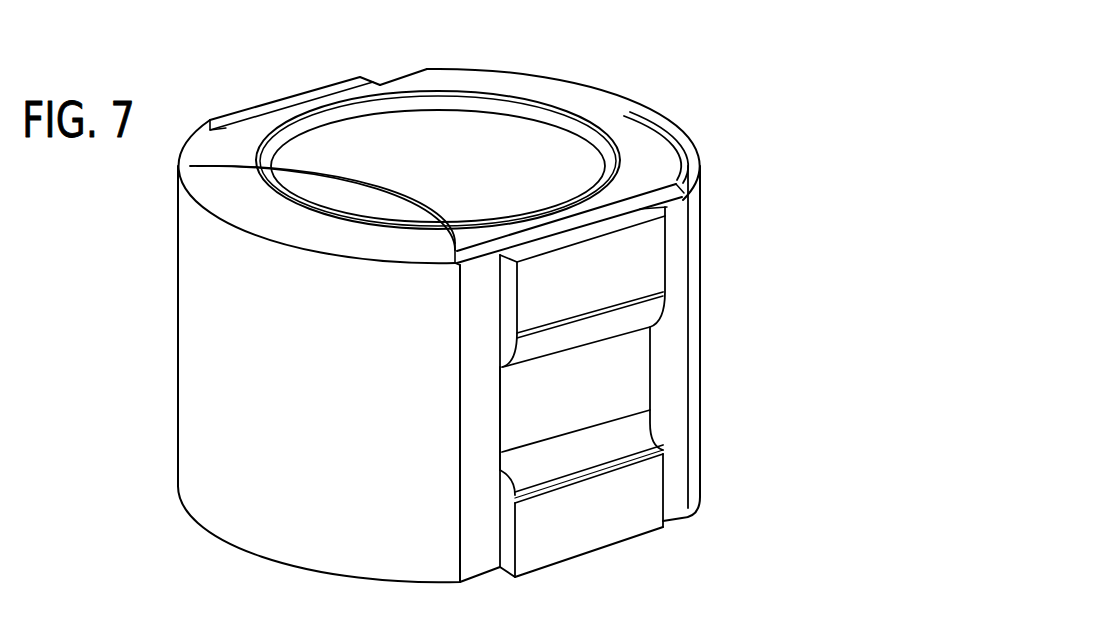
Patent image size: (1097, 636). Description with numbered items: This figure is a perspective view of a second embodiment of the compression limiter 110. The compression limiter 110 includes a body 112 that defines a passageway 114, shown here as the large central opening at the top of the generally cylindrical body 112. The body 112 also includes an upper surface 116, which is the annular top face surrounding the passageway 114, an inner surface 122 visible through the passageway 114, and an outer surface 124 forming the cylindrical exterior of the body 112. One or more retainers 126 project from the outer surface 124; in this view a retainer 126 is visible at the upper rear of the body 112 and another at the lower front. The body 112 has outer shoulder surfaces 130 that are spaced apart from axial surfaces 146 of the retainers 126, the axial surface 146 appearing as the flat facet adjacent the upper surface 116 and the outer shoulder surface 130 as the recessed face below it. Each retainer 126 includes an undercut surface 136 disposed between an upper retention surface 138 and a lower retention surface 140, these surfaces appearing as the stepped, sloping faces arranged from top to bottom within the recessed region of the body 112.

The compression limiter 110 is at (700, 78).
The body 112 is at (706, 345).
The passageway 114 is at (486, 138).
The upper surface 116 is at (625, 125).
The inner surface 122 is at (417, 170).
The outer surface 124 is at (210, 357).
The retainer 126 is at (284, 91).
The outer shoulder surface 130 is at (608, 212).
The undercut surface 136 is at (630, 373).
The upper retention surface 138 is at (641, 260).
The lower retention surface 140 is at (643, 500).
The axial surface 146 is at (650, 204).